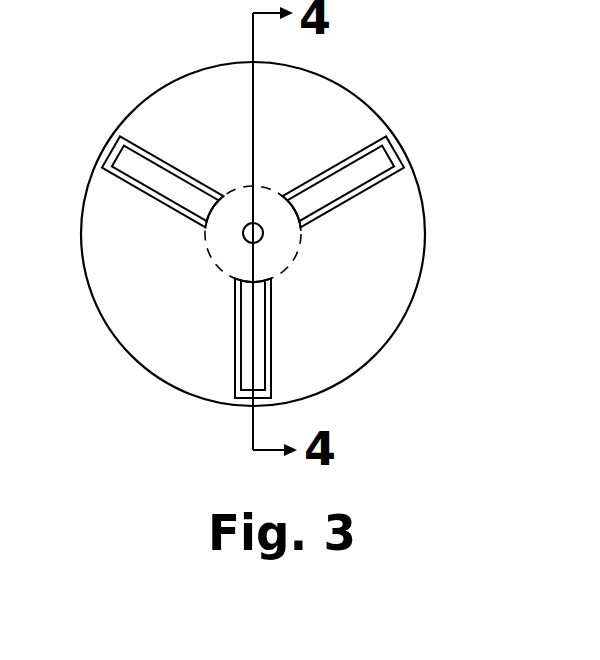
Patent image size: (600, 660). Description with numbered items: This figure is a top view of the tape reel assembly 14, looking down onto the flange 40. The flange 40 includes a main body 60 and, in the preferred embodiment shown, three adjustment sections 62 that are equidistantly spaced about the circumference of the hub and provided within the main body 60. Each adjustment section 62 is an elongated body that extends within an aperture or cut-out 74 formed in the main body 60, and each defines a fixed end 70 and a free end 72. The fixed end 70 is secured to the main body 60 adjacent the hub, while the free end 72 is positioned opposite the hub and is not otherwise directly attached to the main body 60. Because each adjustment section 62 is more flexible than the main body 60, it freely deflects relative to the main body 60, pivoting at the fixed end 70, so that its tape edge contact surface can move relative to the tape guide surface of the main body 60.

The tape reel assembly 14 is at (498, 83).
The flange 40 is at (436, 230).
The main body 60 is at (306, 116).
The adjustment section 62 is at (140, 182).
The fixed end 70 is at (300, 214).
The free end 72 is at (402, 154).
The aperture or cut-out 74 is at (347, 196).